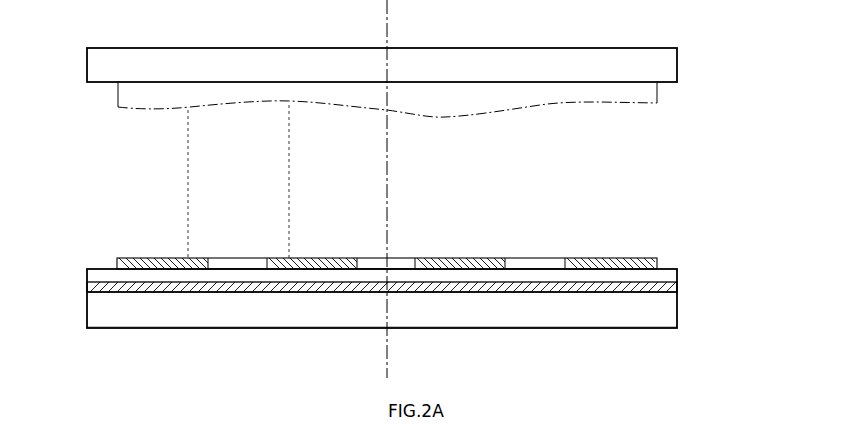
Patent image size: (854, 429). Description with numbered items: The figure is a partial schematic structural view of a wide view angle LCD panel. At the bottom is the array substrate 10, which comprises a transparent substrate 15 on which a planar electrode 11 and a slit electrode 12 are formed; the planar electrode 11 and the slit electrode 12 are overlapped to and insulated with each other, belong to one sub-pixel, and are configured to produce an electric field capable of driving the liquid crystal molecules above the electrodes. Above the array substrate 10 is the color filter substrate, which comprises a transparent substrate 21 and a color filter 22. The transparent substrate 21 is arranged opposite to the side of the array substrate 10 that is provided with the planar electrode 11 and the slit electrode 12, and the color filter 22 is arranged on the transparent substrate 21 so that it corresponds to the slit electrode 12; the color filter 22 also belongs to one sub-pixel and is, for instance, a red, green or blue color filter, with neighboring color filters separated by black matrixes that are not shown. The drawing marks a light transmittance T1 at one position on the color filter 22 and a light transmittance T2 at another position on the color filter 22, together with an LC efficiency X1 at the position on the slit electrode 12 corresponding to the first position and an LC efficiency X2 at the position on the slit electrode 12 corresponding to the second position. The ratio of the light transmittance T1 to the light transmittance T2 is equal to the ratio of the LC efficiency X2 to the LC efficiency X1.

The array substrate 10 is at (677, 304).
The planar electrode 11 is at (87, 287).
The slit electrode 12 is at (115, 263).
The transparent substrate 15 is at (105, 300).
The transparent substrate 21 is at (655, 63).
The color filter 22 is at (650, 90).
The light transmittance T1 is at (190, 108).
The light transmittance T2 is at (289, 103).
The LC efficiency X1 is at (188, 257).
The LC efficiency X2 is at (289, 257).